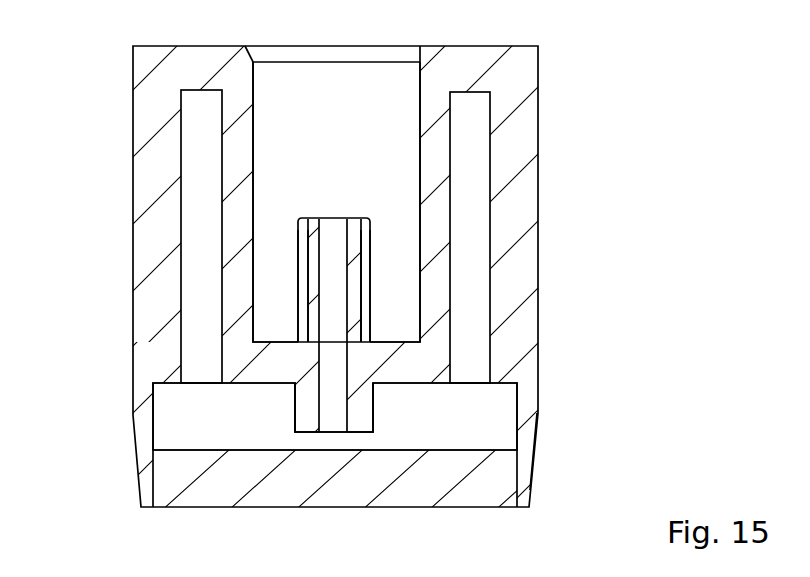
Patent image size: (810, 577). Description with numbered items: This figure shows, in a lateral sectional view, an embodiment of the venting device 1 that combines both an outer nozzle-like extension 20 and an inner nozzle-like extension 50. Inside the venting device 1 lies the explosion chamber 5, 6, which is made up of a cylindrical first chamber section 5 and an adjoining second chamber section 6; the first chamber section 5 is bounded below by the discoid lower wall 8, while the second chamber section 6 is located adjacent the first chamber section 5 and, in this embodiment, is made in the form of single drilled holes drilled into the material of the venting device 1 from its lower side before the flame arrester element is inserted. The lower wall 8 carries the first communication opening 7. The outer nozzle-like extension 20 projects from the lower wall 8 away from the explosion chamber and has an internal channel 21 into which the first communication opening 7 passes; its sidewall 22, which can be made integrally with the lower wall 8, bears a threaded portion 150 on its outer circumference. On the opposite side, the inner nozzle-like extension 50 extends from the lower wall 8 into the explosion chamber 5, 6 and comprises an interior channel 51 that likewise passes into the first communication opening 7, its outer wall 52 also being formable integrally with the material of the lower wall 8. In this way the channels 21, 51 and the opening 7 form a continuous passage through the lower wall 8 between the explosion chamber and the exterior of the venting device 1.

The venting device 1 is at (90, 128).
The first chamber section 5 is at (470, 430).
The second chamber section 6 is at (478, 208).
The first communication opening 7 is at (336, 430).
The lower wall 8 is at (397, 345).
The outer nozzle-like extension 20 is at (312, 218).
The internal channel 21 is at (337, 252).
The sidewall 22 is at (300, 290).
The inner nozzle-like extension 50 is at (381, 420).
The interior channel 51 is at (338, 410).
The outer wall 52 is at (298, 413).
The threaded portion 150 is at (368, 278).